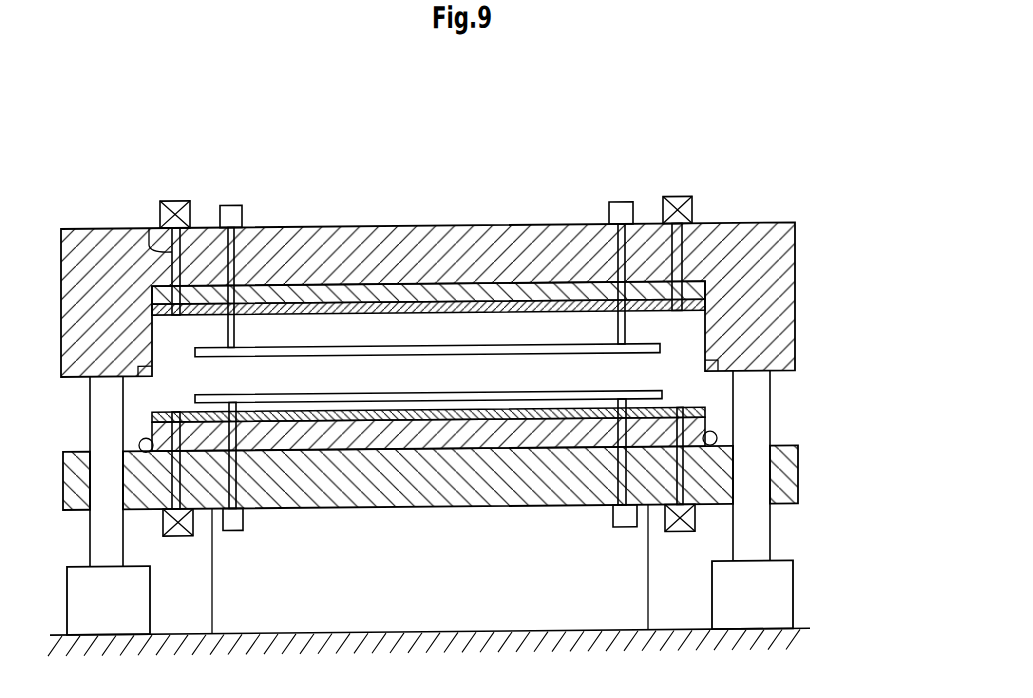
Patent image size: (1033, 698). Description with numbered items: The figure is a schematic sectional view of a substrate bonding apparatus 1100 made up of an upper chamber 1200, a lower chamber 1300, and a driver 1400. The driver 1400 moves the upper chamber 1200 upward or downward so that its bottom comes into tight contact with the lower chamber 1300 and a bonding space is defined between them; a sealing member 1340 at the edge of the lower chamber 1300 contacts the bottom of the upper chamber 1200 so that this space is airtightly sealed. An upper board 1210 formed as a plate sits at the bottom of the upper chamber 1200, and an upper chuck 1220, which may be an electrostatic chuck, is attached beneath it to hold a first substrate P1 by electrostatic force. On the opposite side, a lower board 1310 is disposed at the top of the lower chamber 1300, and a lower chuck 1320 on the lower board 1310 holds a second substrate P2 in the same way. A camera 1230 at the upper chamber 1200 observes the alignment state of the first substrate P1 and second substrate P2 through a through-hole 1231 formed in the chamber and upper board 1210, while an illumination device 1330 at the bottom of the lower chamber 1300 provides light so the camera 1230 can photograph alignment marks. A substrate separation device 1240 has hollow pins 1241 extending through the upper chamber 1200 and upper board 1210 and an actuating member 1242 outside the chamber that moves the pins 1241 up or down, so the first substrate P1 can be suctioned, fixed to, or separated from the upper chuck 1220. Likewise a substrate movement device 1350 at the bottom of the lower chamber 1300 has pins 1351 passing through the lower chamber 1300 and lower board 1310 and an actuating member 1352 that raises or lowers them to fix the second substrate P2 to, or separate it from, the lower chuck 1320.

The substrate bonding apparatus 1100 is at (626, 144).
The upper chamber 1200 is at (783, 243).
The upper board 1210 is at (570, 297).
The upper chuck 1220 is at (384, 306).
The camera 1230 is at (175, 204).
The through-hole 1231 is at (149, 229).
The substrate separation device 1240 is at (415, 211).
The pin 1241 is at (236, 246).
The actuating member 1242 is at (227, 214).
The lower chamber 1300 is at (790, 472).
The lower board 1310 is at (592, 433).
The lower chuck 1320 is at (416, 416).
The illumination device 1330 is at (180, 531).
The sealing member 1340 is at (718, 446).
The substrate movement device 1350 is at (426, 512).
The pin 1351 is at (240, 497).
The actuating member 1352 is at (232, 532).
The driver 1400 is at (782, 594).
The first substrate P1 is at (475, 352).
The second substrate P2 is at (512, 402).